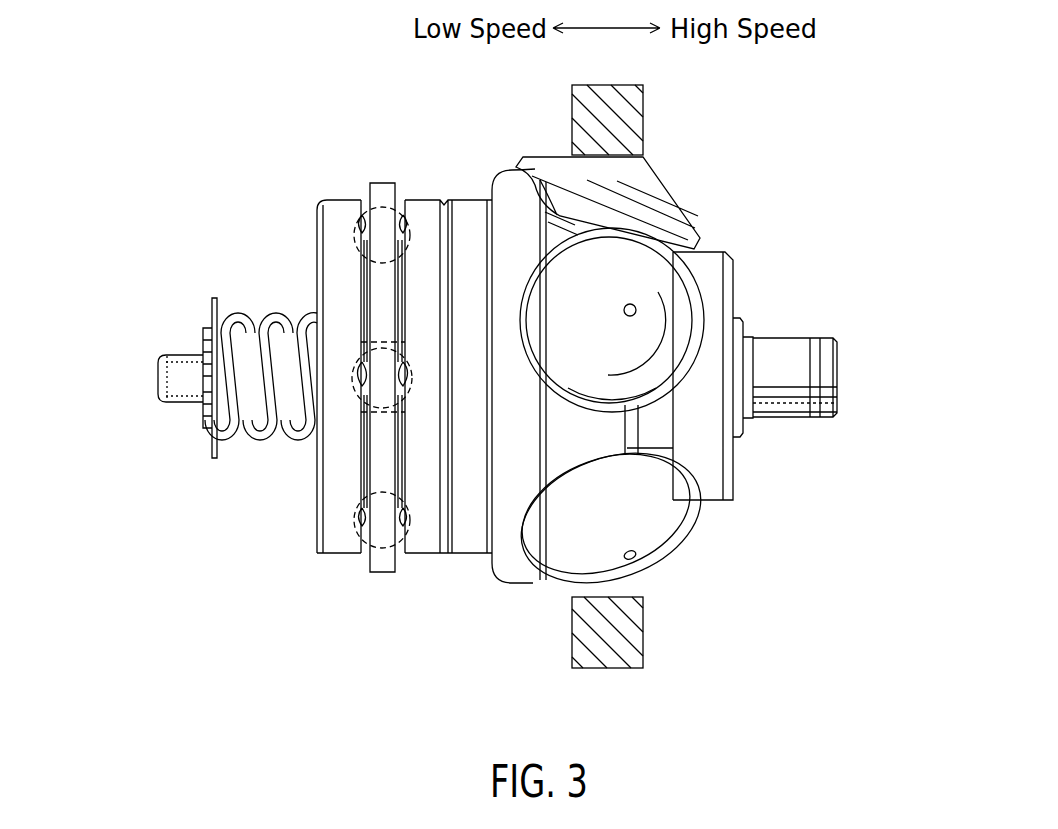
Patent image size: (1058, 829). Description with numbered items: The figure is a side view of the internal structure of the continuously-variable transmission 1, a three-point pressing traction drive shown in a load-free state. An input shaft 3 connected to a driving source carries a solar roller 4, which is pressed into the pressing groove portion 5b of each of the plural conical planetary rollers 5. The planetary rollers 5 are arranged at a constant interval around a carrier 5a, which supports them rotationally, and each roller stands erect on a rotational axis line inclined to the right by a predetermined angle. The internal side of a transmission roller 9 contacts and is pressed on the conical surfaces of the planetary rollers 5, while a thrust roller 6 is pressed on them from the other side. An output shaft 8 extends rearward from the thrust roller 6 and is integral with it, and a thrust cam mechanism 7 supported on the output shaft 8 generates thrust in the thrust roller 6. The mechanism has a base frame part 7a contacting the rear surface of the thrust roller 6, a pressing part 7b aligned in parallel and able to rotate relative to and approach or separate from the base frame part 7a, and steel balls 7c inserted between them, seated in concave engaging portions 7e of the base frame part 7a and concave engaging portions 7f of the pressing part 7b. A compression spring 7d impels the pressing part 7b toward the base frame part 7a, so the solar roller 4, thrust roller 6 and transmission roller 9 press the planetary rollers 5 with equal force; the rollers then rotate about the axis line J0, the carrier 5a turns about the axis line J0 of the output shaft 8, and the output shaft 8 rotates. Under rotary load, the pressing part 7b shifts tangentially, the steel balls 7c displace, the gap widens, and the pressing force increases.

The continuously-variable transmission 1 is at (336, 97).
The input shaft 3 is at (777, 355).
The solar roller 4 is at (655, 432).
The planetary rollers 5 is at (635, 178).
The carrier 5a is at (565, 435).
The pressing groove portion 5b is at (587, 217).
The thrust roller 6 is at (519, 215).
The thrust cam mechanism 7 is at (357, 575).
The base frame part 7a is at (428, 373).
The pressing part 7b is at (345, 510).
The steel balls 7c is at (357, 248).
The compression spring 7d is at (242, 336).
The concave engaging portions 7e is at (405, 212).
The concave engaging portions 7f is at (358, 222).
The output shaft 8 is at (184, 392).
The transmission roller 9 is at (620, 115).
The axis line J0 is at (232, 380).